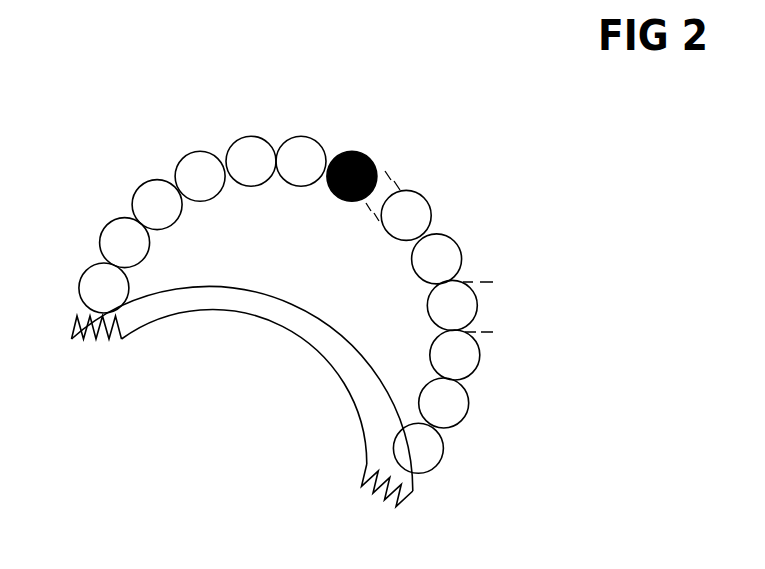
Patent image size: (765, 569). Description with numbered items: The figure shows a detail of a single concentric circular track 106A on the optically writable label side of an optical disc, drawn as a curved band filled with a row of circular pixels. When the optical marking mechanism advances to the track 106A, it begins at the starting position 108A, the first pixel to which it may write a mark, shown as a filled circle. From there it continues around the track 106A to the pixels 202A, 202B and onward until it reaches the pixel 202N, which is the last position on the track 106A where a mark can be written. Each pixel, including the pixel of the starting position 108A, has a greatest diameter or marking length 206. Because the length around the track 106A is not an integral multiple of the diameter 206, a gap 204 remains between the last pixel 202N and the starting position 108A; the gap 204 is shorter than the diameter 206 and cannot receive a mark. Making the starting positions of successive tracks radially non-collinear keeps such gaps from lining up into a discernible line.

The track 106A is at (412, 478).
The pixel 202A is at (315, 147).
The pixel 202B is at (238, 147).
The last pixel 202N is at (417, 200).
The starting position 108A is at (396, 124).
The gap 204 is at (368, 217).
The diameter 206 is at (497, 302).